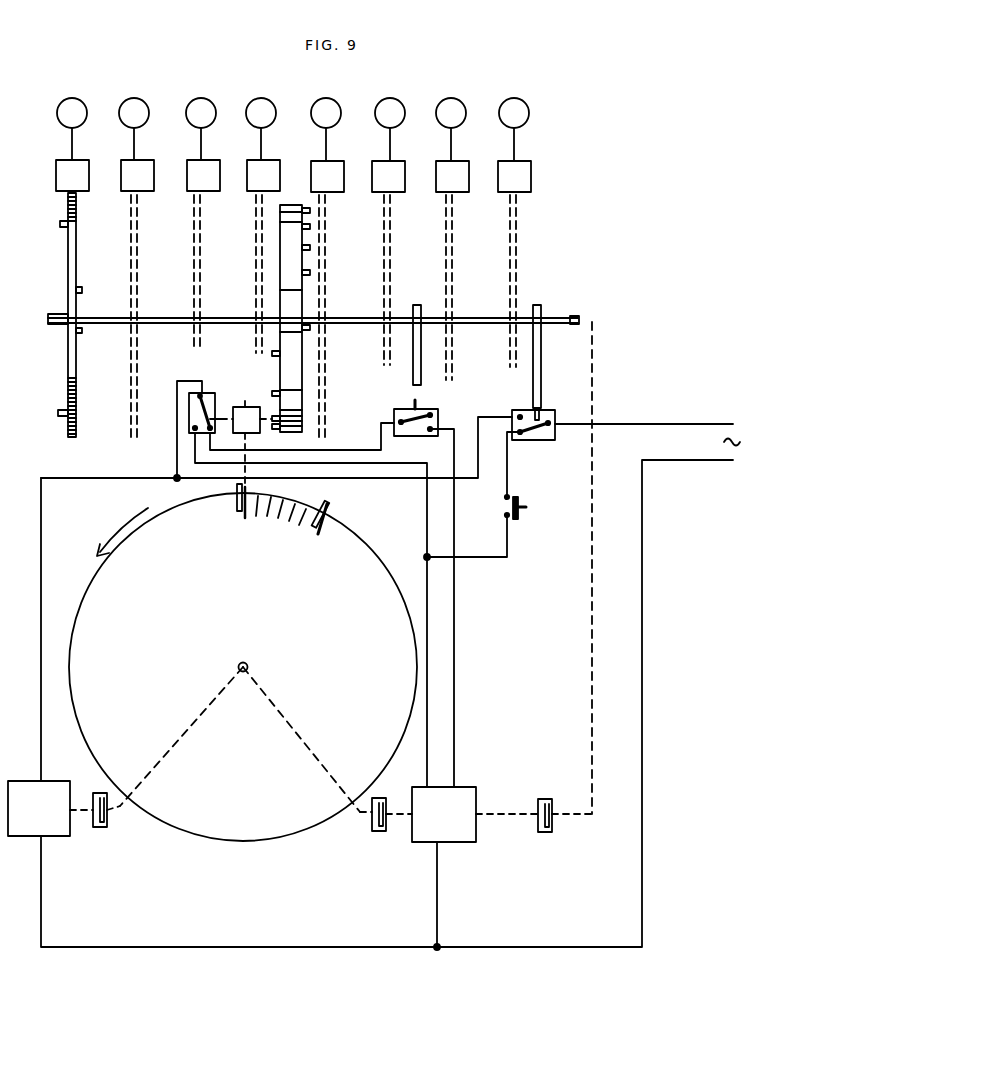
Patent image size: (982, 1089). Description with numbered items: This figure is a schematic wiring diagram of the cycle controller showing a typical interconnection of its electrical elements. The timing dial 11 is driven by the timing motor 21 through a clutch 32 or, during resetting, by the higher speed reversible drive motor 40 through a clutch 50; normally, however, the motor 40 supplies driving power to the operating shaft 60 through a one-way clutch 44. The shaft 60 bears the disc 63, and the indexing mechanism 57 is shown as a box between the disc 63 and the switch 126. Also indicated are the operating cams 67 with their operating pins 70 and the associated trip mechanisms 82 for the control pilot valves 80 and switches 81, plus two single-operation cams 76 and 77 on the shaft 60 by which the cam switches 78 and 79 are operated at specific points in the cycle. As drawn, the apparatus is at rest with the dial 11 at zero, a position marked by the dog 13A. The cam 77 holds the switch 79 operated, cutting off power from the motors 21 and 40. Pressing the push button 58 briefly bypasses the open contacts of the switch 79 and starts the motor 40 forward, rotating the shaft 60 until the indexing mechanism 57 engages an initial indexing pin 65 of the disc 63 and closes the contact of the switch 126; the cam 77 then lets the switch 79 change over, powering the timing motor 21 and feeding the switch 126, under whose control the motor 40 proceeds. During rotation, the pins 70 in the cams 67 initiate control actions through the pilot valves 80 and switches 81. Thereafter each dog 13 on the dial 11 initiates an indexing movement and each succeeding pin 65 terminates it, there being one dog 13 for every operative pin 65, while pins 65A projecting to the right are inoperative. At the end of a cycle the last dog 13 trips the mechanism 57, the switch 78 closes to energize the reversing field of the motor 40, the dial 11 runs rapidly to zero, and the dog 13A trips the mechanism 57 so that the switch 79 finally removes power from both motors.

The control pilot valve 80 is at (82, 112).
The switch 81 is at (336, 112).
The trip mechanism 82 is at (82, 163).
The operating pin 70 is at (60, 224).
The operating cam 67 is at (77, 259).
The operating shaft 60 is at (222, 318).
The inoperative pin 65A is at (310, 227).
The disc 63 is at (297, 300).
The indexing pin 65 is at (276, 352).
The switch 126 is at (219, 390).
The indexing mechanism 57 is at (246, 437).
The single-operation cam 76 is at (416, 372).
The single-operation cam 77 is at (533, 387).
The cam switch 78 is at (440, 418).
The cam switch 79 is at (550, 418).
The push button 58 is at (526, 511).
The dog 13A is at (236, 500).
The dog 13 is at (330, 512).
The timing dial 11 is at (177, 648).
The timing motor 21 is at (46, 823).
The clutch 32 is at (104, 827).
The clutch 50 is at (380, 831).
The reversible drive motor 40 is at (452, 827).
The one-way clutch 44 is at (546, 832).